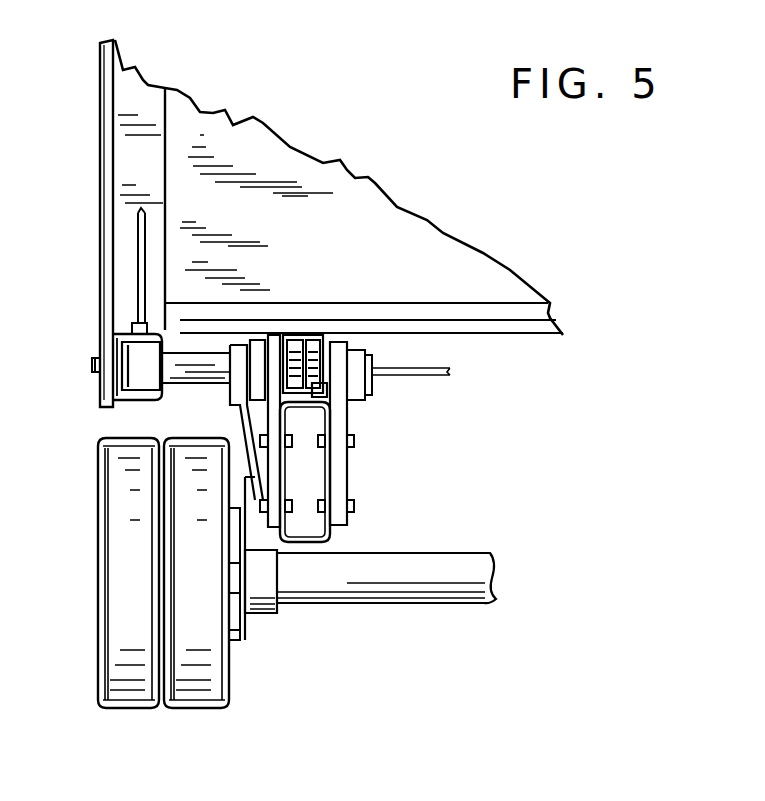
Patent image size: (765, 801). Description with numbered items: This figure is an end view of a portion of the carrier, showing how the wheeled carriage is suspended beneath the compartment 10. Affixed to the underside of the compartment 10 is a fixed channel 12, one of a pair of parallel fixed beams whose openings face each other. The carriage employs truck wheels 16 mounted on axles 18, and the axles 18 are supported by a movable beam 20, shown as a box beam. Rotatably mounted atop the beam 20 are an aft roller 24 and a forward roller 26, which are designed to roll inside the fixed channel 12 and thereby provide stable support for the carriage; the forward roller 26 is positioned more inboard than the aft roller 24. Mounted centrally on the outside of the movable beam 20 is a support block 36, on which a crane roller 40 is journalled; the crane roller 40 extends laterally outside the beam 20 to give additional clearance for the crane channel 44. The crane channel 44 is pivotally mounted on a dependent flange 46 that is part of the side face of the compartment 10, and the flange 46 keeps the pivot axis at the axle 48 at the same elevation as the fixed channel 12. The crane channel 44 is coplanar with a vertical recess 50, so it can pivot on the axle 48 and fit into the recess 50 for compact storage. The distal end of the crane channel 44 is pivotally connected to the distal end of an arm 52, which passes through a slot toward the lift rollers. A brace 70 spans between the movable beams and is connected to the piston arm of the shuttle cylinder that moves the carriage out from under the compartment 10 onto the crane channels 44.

The compartment 10 is at (338, 160).
The fixed channels 12 is at (293, 345).
The truck wheels 16 is at (155, 703).
The axles 18 is at (450, 597).
The movable beam 20 is at (330, 540).
The aft roller 24 is at (300, 347).
The forward roller 26 is at (320, 343).
The support block 36 is at (253, 410).
The crane roller 40 is at (150, 353).
The crane channel 44 is at (138, 398).
The dependent flange 46 is at (103, 387).
The axle 48 is at (92, 365).
The vertical recess 50 is at (137, 103).
The arm 52 is at (138, 252).
The brace 70 is at (417, 377).